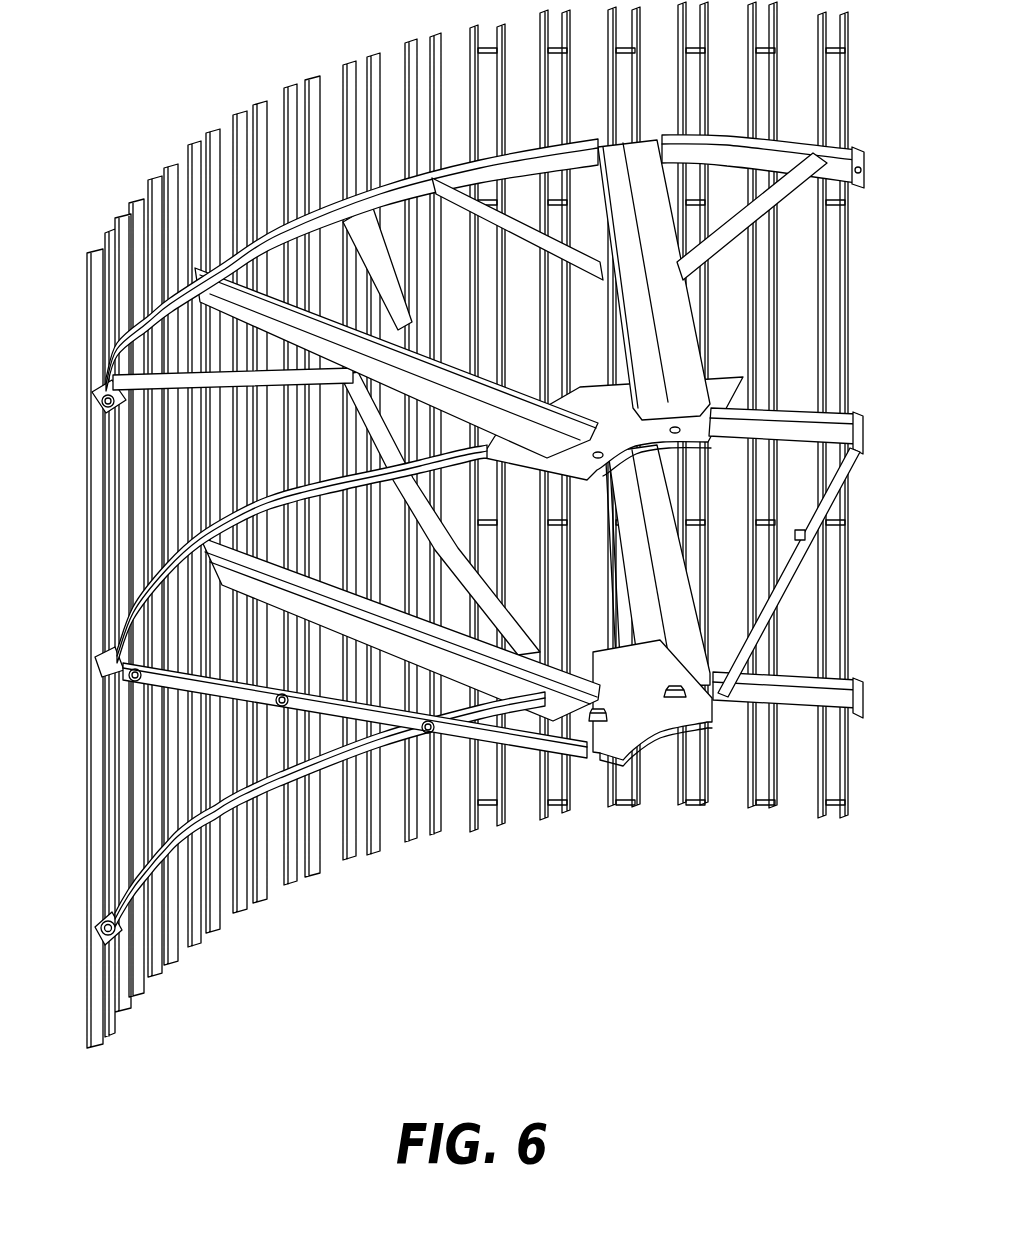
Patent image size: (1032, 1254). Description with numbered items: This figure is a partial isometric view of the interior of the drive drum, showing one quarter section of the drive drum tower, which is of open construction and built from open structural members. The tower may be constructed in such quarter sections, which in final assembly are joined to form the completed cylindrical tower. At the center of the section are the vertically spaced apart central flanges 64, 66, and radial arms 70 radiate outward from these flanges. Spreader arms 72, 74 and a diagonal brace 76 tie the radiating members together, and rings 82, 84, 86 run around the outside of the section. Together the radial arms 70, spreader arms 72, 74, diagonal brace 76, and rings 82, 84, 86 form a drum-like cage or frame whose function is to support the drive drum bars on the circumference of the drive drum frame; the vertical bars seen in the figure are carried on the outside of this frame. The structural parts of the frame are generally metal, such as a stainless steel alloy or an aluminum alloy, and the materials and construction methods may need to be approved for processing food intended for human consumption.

The flange central 64 is at (722, 383).
The flange central 66 is at (722, 640).
The radial arms 70 is at (248, 272).
The spreader arm 72 is at (175, 386).
The spreader arm 74 is at (365, 212).
The diagonal brace 76 is at (252, 808).
The ring 82 is at (795, 152).
The ring 84 is at (803, 415).
The ring 86 is at (805, 678).